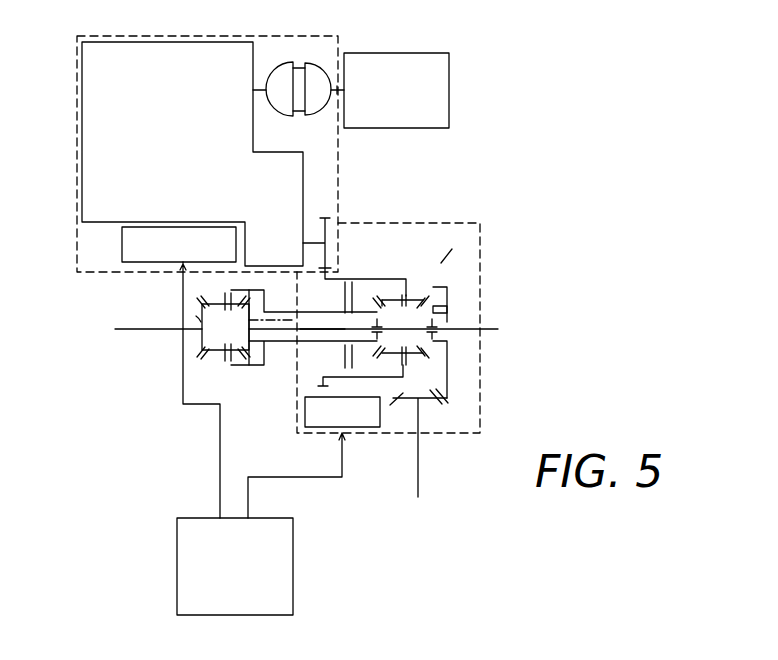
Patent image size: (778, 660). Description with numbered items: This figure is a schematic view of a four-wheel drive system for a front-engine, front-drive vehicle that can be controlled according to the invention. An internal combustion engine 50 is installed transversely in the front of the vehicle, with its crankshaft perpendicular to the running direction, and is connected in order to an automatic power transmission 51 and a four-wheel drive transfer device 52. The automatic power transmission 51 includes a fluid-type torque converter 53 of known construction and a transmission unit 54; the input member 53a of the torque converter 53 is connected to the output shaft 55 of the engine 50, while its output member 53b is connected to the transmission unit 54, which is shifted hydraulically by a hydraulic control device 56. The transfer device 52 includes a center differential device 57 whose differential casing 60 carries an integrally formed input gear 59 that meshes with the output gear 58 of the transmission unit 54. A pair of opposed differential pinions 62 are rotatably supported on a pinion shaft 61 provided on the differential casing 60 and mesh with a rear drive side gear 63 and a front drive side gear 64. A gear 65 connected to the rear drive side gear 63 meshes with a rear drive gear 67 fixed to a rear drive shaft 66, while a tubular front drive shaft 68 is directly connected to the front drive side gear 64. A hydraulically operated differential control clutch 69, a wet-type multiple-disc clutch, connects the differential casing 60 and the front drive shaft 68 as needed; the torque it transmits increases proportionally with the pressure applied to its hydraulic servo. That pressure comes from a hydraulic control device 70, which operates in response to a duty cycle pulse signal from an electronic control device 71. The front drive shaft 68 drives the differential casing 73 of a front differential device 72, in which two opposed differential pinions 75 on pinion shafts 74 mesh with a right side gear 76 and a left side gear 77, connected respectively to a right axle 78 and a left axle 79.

The internal combustion engine 50 is at (449, 93).
The automatic power transmission 51 is at (236, 31).
The 4-wheel drive transfer device 52 is at (412, 218).
The fluid-type torque converter 53 is at (298, 82).
The input member 53a is at (312, 117).
The output member 53b is at (285, 118).
The transmission unit 54 is at (85, 126).
The output shaft 55 is at (340, 87).
The hydraulic control device 56 is at (139, 262).
The center differential device 57 is at (422, 294).
The output gear 58 is at (335, 232).
The input gear 59 is at (347, 281).
The differential casing 60 is at (385, 291).
The pinion shaft 61 is at (405, 294).
The differential pinions 62 is at (434, 288).
The rear drive side gear 63 is at (448, 310).
The front drive side gear 64 is at (352, 372).
The gear 65 is at (448, 262).
The rear drive shaft 66 is at (419, 464).
The rear drive gear 67 is at (427, 406).
The tubular front drive shaft 68 is at (266, 346).
The differential control clutch 69 is at (343, 361).
The hydraulic control device 70 is at (361, 425).
The electronic control device 71 is at (282, 525).
The front differential device 72 is at (209, 363).
The differential casing 73 is at (266, 302).
The pinion shafts 74 is at (224, 298).
The differential pinions 75 is at (236, 298).
The right side gear 76 is at (292, 320).
The left side gear 77 is at (200, 318).
The right axle 78 is at (310, 332).
The left axle 79 is at (128, 332).